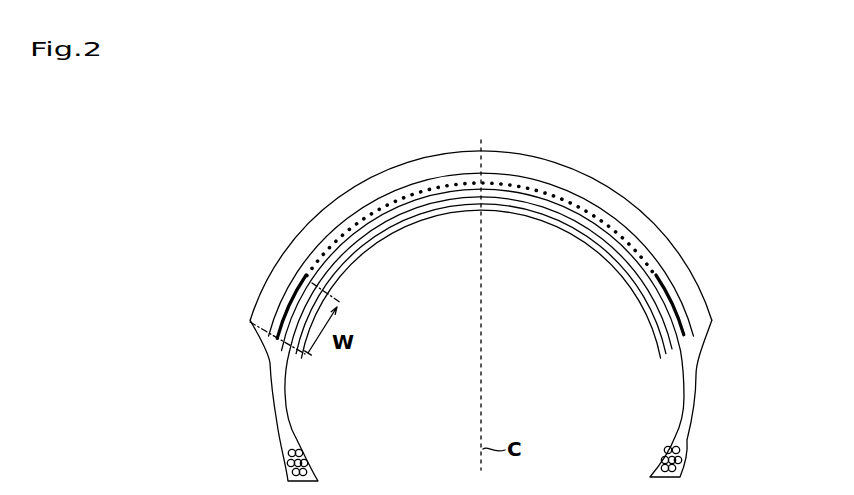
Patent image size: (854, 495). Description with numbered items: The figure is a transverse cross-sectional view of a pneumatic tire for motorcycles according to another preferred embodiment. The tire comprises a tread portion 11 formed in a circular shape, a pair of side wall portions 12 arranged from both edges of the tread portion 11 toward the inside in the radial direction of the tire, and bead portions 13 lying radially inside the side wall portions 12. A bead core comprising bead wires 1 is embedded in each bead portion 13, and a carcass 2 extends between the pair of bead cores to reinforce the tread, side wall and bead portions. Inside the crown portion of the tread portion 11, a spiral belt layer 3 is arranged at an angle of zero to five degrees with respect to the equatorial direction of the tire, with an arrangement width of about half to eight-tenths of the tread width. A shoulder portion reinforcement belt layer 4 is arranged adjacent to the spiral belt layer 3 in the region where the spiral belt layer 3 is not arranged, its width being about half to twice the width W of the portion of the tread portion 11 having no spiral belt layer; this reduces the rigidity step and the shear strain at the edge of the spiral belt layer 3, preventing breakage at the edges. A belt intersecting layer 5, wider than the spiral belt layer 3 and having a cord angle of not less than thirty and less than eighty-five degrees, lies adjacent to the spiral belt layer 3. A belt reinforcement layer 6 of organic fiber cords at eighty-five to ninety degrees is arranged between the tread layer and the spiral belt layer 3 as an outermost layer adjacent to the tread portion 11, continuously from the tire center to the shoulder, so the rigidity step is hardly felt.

The bead wire 1 is at (677, 450).
The carcass 2 is at (685, 385).
The spiral belt layer 3 is at (605, 222).
The shoulder portion reinforcement belt layer 4 is at (664, 283).
The belt intersecting layer 5 is at (672, 313).
The belt reinforcement layer 6 is at (634, 236).
The tread portion 11 is at (580, 170).
The side wall portion 12 is at (269, 362).
The bead portion 13 is at (289, 478).